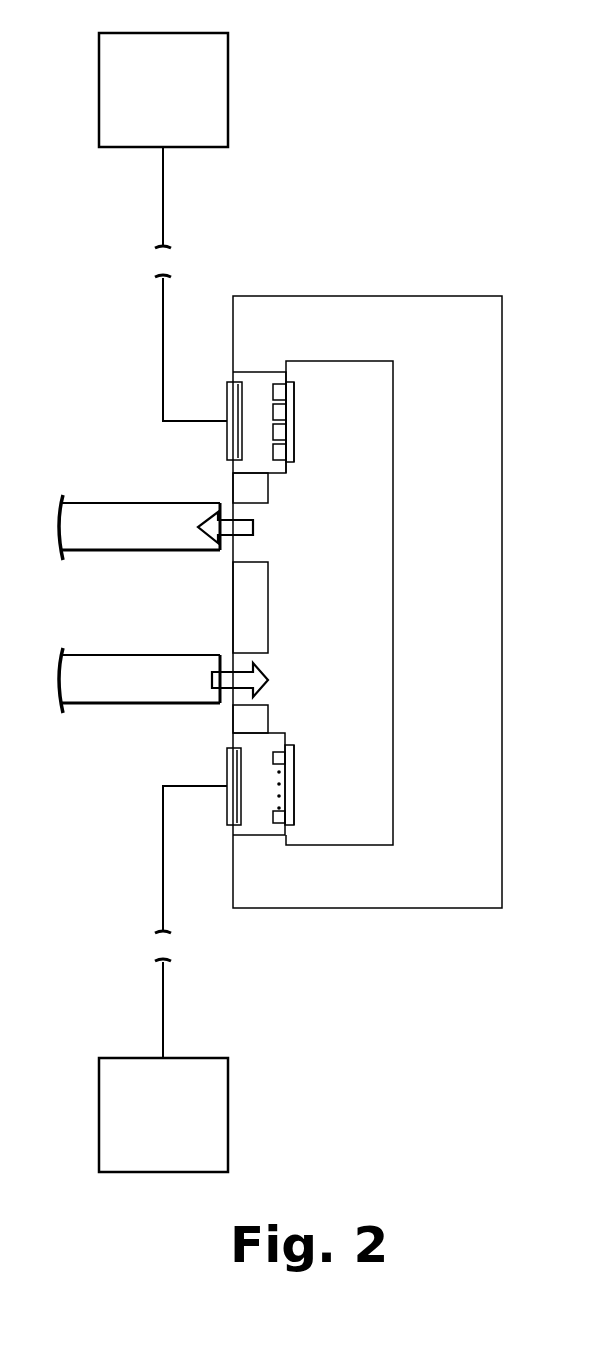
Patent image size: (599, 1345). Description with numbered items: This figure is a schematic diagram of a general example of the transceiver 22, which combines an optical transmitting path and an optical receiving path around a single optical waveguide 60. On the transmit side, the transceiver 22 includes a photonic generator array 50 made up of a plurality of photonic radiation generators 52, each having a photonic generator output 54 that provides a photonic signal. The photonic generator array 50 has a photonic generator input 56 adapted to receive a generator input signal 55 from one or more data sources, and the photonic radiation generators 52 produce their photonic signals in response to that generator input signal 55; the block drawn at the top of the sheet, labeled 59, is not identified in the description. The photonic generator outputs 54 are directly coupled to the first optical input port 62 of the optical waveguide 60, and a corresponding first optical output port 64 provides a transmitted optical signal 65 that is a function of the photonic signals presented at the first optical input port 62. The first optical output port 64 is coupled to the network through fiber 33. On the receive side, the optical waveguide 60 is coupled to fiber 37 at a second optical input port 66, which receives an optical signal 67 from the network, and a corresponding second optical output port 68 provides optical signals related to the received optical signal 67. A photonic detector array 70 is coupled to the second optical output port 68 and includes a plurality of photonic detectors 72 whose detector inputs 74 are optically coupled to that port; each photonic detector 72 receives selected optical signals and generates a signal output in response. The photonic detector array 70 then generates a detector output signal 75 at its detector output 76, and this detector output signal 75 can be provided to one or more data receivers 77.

The transceiver 22 is at (510, 613).
The fiber 33 is at (90, 504).
The fiber 37 is at (125, 705).
The photonic generator array 50 is at (243, 378).
The photonic radiation generators 52 is at (273, 392).
The photonic generator output 54 is at (290, 397).
The generator input signal 55 is at (163, 298).
The photonic generator input 56 is at (227, 435).
The remote device 59 is at (163, 90).
The optical waveguide 60 is at (380, 599).
The first optical input port 62 is at (293, 437).
The first optical output port 64 is at (258, 527).
The transmitted optical signal 65 is at (230, 541).
The second optical input port 66 is at (268, 681).
The optical signal 67 is at (228, 669).
The second optical output port 68 is at (292, 797).
The photonic detector array 70 is at (243, 832).
The photonic detectors 72 is at (269, 814).
The detector inputs 74 is at (286, 817).
The detector output signal 75 is at (163, 844).
The detector output 76 is at (229, 805).
The data receivers 77 is at (163, 1115).